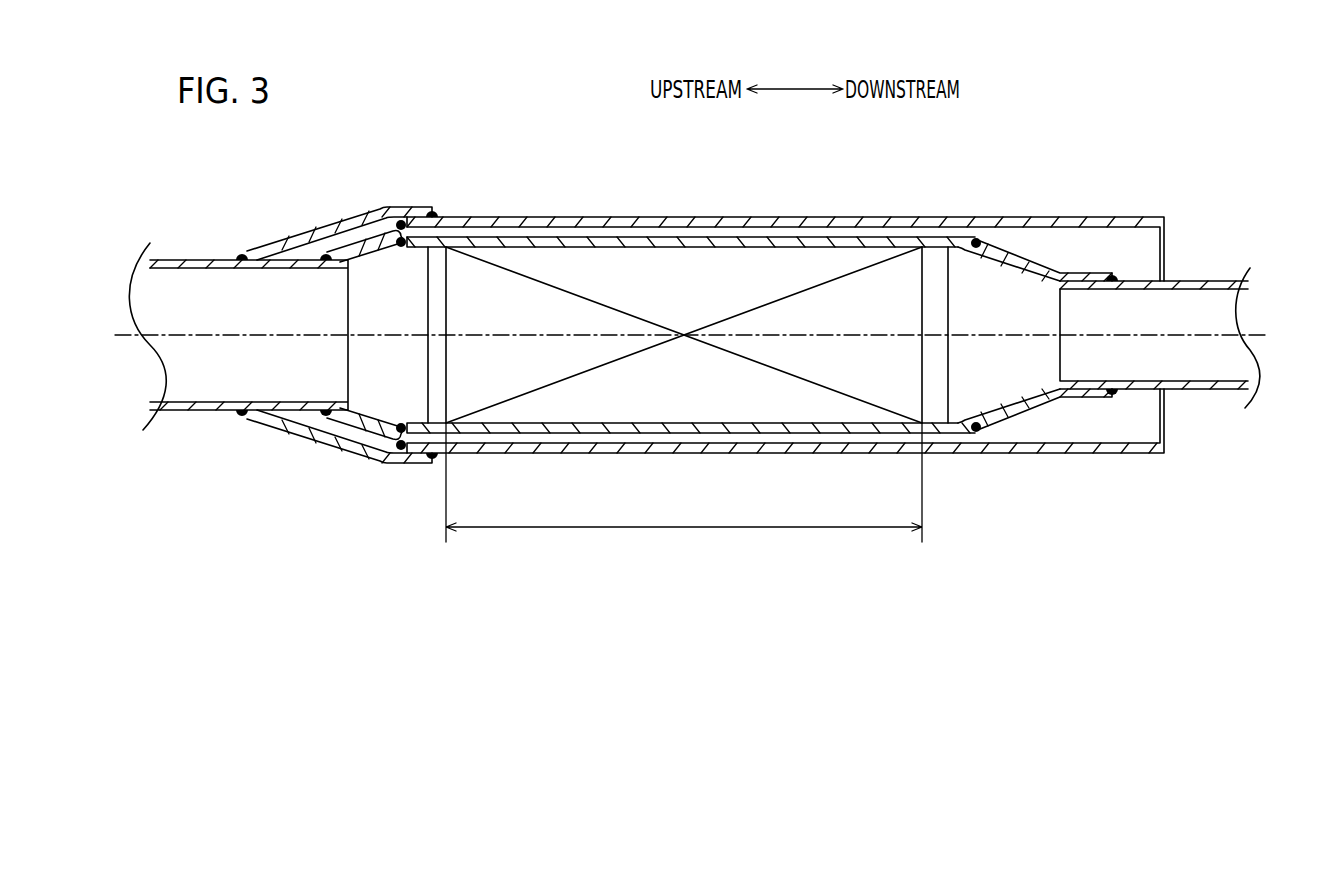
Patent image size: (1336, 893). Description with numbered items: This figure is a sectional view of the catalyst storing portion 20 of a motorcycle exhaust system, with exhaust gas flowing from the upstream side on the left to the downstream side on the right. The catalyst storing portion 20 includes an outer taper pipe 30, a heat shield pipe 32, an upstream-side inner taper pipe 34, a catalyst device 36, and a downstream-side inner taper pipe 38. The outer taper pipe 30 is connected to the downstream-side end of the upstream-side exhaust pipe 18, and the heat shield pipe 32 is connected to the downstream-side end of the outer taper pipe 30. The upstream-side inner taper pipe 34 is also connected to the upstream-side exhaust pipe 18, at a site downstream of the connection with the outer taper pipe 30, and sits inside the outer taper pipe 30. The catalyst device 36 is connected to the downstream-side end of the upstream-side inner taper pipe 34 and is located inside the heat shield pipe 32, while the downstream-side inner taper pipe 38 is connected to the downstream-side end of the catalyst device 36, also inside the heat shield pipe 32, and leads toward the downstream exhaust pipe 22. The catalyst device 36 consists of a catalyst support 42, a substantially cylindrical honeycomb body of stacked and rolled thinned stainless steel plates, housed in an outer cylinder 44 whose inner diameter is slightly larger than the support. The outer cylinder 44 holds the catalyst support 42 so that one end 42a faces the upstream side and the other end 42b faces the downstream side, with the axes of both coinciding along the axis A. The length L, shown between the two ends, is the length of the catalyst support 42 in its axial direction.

The upstream-side exhaust pipe 18 is at (191, 259).
The catalyst storing portion 20 is at (700, 295).
The downstream exhaust pipe 22 is at (1187, 281).
The outer taper pipe 30 is at (328, 225).
The heat shield pipe 32 is at (585, 217).
The upstream-side inner taper pipe 34 is at (358, 242).
The catalyst device 36 is at (685, 280).
The downstream-side inner taper pipe 38 is at (1016, 256).
The catalyst support 42 is at (685, 295).
The one end of the catalyst support 42a is at (446, 365).
The another end of the catalyst support 42b is at (922, 367).
The outer cylinder 44 is at (659, 237).
The axis A is at (701, 337).
The length L is at (684, 482).